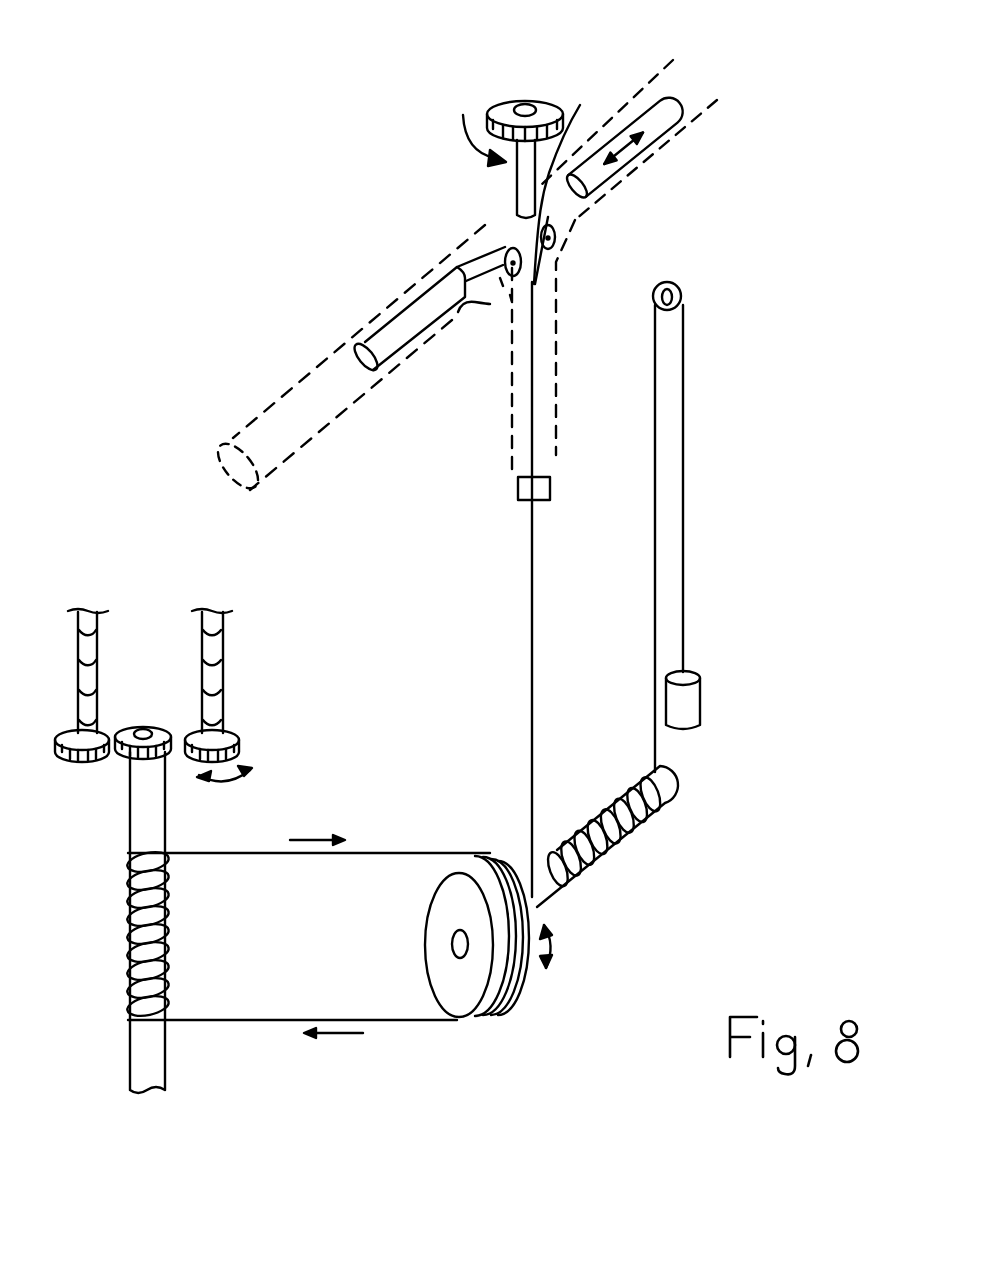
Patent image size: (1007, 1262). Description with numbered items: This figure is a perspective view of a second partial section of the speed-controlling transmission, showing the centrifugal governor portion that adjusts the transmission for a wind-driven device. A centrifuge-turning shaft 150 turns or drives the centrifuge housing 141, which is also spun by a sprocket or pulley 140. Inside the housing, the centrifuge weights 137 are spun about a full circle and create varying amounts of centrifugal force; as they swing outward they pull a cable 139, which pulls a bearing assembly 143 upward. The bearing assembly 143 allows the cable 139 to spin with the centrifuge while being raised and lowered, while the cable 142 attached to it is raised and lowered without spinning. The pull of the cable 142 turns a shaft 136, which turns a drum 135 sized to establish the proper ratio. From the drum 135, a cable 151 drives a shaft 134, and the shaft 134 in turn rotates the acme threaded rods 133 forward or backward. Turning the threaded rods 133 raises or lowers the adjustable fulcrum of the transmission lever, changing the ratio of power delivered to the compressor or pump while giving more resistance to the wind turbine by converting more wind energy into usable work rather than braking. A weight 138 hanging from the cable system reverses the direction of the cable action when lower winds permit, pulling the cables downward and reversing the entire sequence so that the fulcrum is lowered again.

The acme threaded rods 133 is at (197, 602).
The shaft 134 is at (130, 810).
The drum 135 is at (520, 988).
The shaft 136 is at (665, 808).
The centrifuge weights 137 is at (628, 152).
The weight 138 is at (700, 700).
The cable 139 is at (507, 243).
The sprocket or pulley 140 is at (510, 98).
The centrifuge housing 141 is at (352, 337).
The cable 142 is at (527, 752).
The bearing assembly 143 is at (517, 492).
The centrifuge-turning shaft 150 is at (580, 105).
The cable 151 is at (420, 1022).